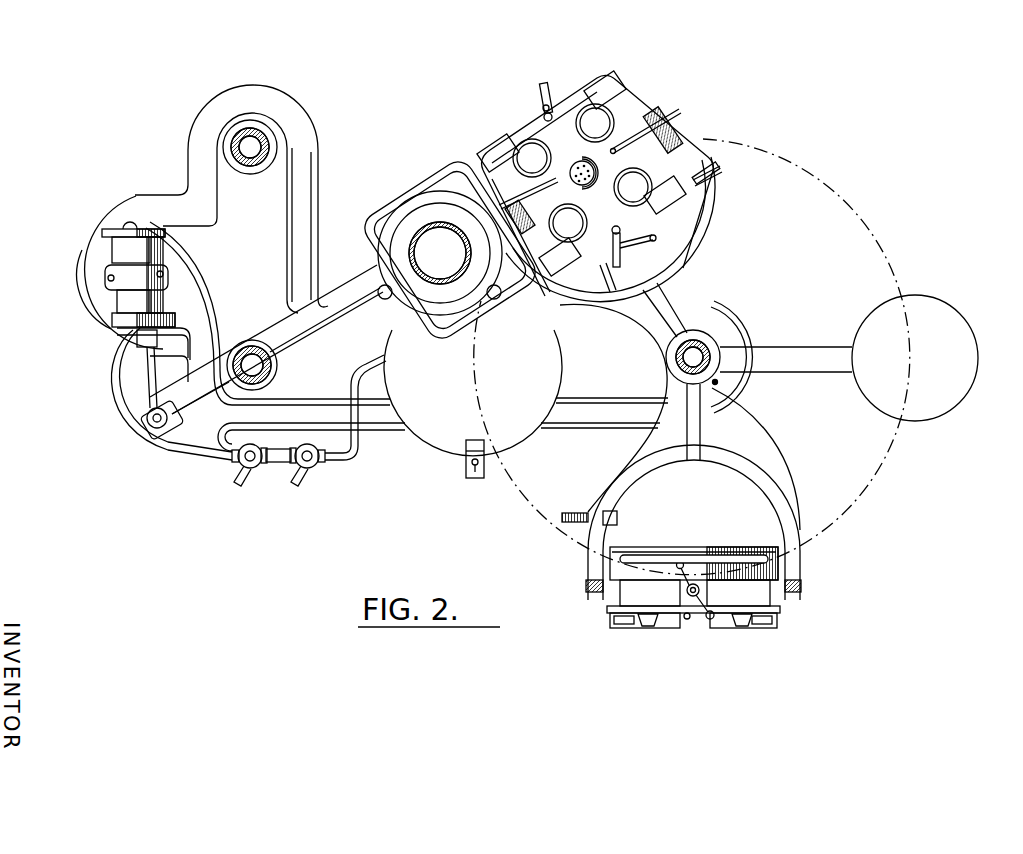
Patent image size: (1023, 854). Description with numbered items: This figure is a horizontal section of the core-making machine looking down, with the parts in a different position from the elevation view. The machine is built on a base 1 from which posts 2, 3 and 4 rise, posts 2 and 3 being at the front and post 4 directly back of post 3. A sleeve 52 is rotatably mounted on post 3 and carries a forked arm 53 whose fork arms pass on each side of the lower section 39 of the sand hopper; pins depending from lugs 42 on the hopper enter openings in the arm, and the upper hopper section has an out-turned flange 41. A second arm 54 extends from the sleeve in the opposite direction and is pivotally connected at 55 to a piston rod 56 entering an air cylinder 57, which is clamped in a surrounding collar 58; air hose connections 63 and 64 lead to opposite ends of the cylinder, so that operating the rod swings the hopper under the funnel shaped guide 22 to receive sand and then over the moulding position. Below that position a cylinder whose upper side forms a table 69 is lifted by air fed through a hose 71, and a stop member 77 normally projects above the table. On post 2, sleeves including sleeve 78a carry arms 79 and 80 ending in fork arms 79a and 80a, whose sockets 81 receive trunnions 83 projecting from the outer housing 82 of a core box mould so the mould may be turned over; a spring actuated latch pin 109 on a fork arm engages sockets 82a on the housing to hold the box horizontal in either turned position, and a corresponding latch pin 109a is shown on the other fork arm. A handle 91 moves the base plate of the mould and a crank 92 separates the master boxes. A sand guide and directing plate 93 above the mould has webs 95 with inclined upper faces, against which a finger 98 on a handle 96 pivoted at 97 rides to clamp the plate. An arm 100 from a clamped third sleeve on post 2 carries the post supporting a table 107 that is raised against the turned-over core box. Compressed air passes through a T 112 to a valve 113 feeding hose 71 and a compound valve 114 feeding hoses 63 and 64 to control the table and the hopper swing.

The base 1 is at (273, 238).
The post 2 is at (708, 352).
The post 3 is at (244, 348).
The post 4 is at (255, 134).
The funnel shaped guide 22 is at (424, 232).
The lower section of sand hopper 39 is at (512, 276).
The upper out-turned flange 41 is at (395, 251).
The lugs 42 is at (435, 186).
The sleeve 52 is at (253, 346).
The arm 53 is at (320, 350).
The second arm 54 is at (197, 412).
The pivot connection 55 is at (156, 424).
The piston rod 56 is at (152, 373).
The air cylinder 57 is at (120, 248).
The collar 58 is at (110, 283).
The air hose connection 63 is at (188, 254).
The air hose connection 64 is at (132, 424).
The table 69 is at (437, 431).
The hose 71 is at (372, 450).
The stop member 77 is at (485, 448).
The sleeve 78a is at (717, 383).
The arm 79 is at (683, 300).
The fork arms 79a is at (712, 203).
The arm 80 is at (713, 423).
The fork arms 80a is at (588, 492).
The sockets 81 is at (655, 113).
The outer housing 82 is at (768, 589).
The sockets 82a is at (683, 193).
The trunnions 83 is at (666, 130).
The handle 91 is at (757, 556).
The crank 92 is at (622, 247).
The sand guide and directing plate 93 is at (623, 123).
The webs 95 is at (553, 152).
The handle 96 is at (543, 100).
The pivot 97 is at (545, 110).
The finger 98 is at (582, 173).
The arm 100 is at (785, 356).
The table 107 is at (943, 321).
The latch pin 109 is at (611, 521).
The bolt 109a is at (720, 174).
The T 112 is at (277, 466).
The valve 113 is at (307, 470).
The compound valve 114 is at (246, 470).